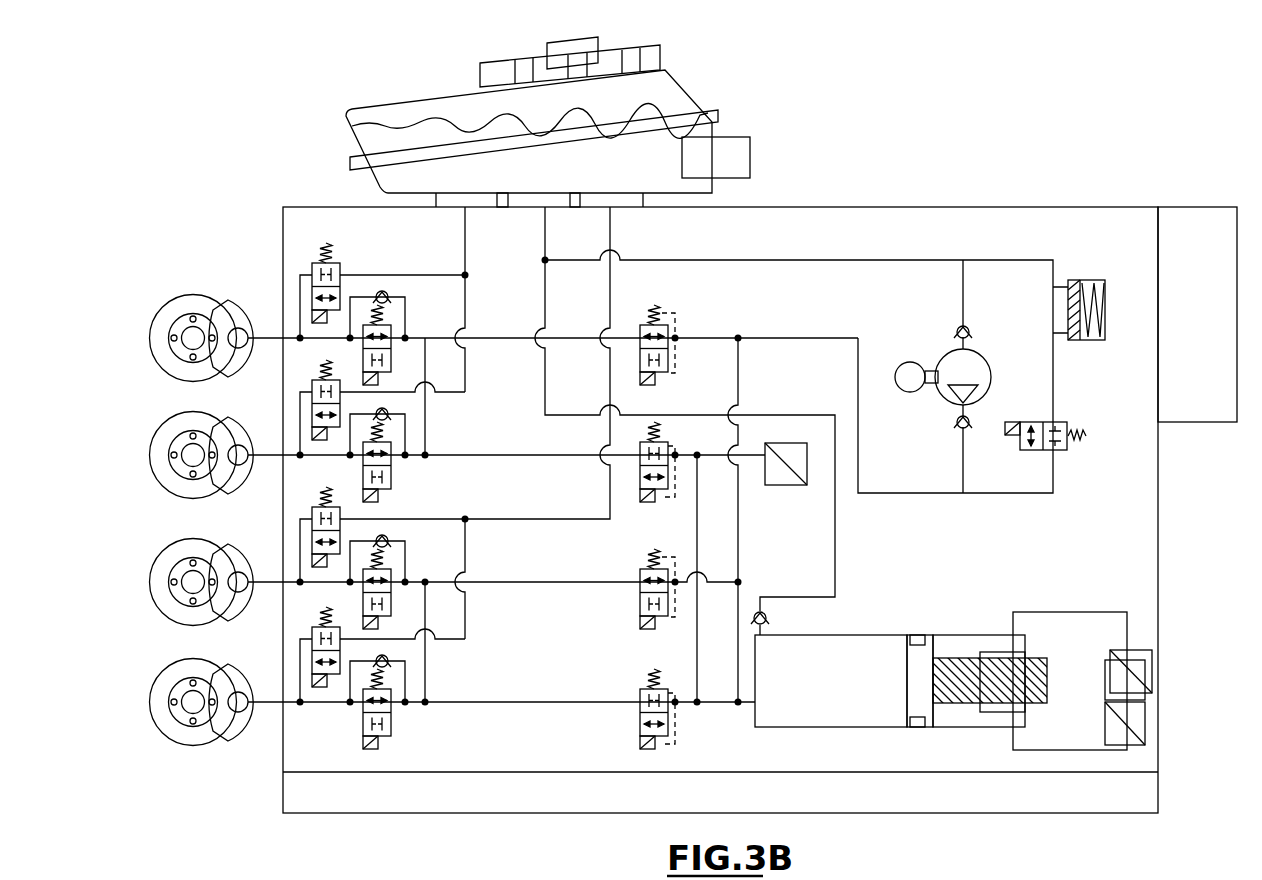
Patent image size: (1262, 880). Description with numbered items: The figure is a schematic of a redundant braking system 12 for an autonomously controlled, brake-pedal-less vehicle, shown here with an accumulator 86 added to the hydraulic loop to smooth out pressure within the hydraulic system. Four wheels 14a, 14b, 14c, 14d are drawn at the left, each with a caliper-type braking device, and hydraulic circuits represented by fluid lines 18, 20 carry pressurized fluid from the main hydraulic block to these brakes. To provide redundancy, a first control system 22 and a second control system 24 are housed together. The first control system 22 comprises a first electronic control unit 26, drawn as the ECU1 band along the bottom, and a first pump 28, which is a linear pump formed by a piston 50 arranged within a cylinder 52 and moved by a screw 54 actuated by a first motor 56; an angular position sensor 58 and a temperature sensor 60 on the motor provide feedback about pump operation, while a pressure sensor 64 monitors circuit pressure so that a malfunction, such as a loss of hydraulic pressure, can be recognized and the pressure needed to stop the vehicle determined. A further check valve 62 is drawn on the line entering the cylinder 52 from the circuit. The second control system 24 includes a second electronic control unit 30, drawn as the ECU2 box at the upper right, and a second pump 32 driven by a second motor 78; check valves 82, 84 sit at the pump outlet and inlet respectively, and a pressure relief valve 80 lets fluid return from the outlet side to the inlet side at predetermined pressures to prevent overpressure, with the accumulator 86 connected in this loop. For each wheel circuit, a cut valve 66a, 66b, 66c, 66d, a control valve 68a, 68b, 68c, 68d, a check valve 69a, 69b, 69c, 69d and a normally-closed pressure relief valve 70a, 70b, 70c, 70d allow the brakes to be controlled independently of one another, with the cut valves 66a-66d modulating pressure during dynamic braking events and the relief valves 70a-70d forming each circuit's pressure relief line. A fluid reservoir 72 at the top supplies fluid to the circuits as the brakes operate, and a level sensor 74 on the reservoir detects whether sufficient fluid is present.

The braking system 12 is at (1003, 90).
The wheel 14a is at (153, 318).
The wheel 14b is at (153, 435).
The wheel 14c is at (153, 562).
The wheel 14d is at (153, 682).
The fluid line 18 is at (490, 318).
The fluid line 20 is at (499, 727).
The first control system 22 is at (974, 580).
The second control system 24 is at (936, 520).
The first electronic control unit 26 is at (598, 800).
The first pump 28 is at (872, 624).
The second electronic control unit 30 is at (1198, 413).
The second pump 32 is at (937, 349).
The piston 50 is at (915, 700).
The cylinder 52 is at (815, 728).
The screw 54 is at (953, 660).
The first motor 56 is at (1075, 628).
The angular position sensor 58 is at (1153, 668).
The temperature sensor 60 is at (1147, 720).
The check valve 62 is at (768, 617).
The pressure sensor 64 is at (793, 486).
The cut valve 66a is at (676, 338).
The cut valve 66b is at (636, 500).
The cut valve 66c is at (640, 605).
The cut valve 66d is at (640, 725).
The control valve 68a is at (363, 358).
The control valve 68b is at (363, 475).
The control valve 68c is at (363, 602).
The control valve 68d is at (365, 718).
The check valve 69a is at (392, 297).
The check valve 69b is at (392, 414).
The check valve 69c is at (392, 541).
The check valve 69d is at (392, 660).
The pressure relief valve 70a is at (312, 272).
The pressure relief valve 70b is at (312, 389).
The pressure relief valve 70c is at (312, 516).
The pressure relief valve 70d is at (312, 636).
The fluid reservoir 72 is at (675, 80).
The level sensor 74 is at (750, 158).
The second motor 78 is at (905, 393).
The pressure relief valve 80 is at (1060, 450).
The check valve 82 is at (955, 422).
The check valve 84 is at (975, 332).
The accumulator 86 is at (1078, 280).